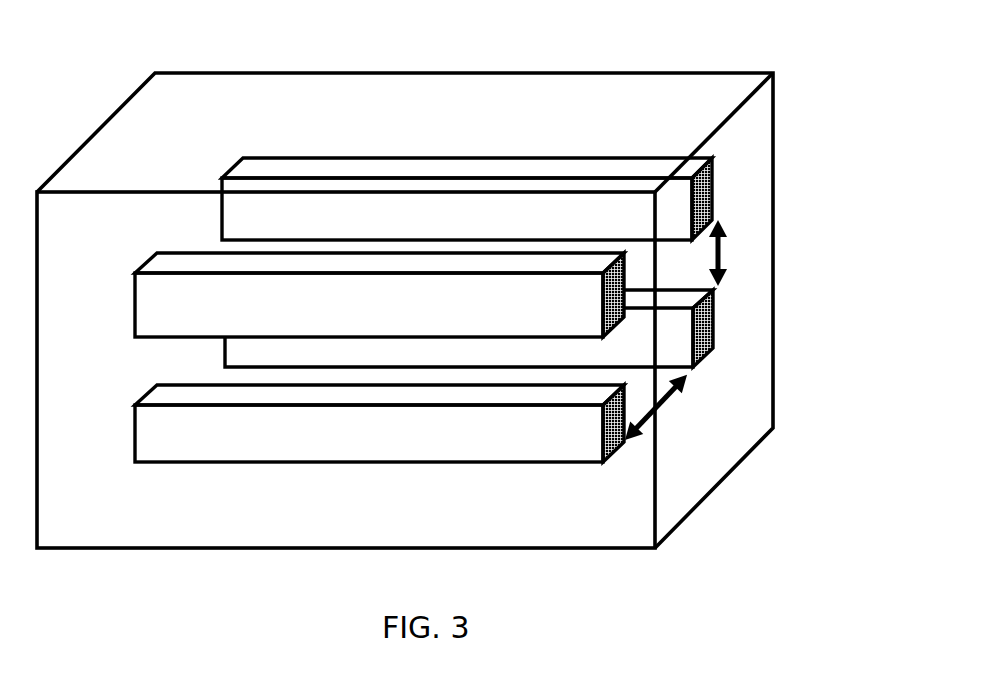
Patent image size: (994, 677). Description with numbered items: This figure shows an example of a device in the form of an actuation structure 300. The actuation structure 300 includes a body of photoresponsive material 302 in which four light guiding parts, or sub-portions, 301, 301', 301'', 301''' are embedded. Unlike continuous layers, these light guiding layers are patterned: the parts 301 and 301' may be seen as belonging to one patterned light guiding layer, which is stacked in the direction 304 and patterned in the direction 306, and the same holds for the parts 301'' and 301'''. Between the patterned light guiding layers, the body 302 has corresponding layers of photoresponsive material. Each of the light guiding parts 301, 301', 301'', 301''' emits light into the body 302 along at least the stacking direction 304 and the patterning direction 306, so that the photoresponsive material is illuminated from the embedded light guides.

The actuation structure 300 is at (199, 58).
The body of photoresponsive material 302 is at (405, 310).
The light guiding part 301 is at (467, 199).
The light guiding part 301' is at (379, 295).
The light guiding part 301'' is at (379, 423).
The light guiding part 301''' is at (566, 328).
The stacking direction 304 is at (722, 256).
The patterning direction 306 is at (658, 407).